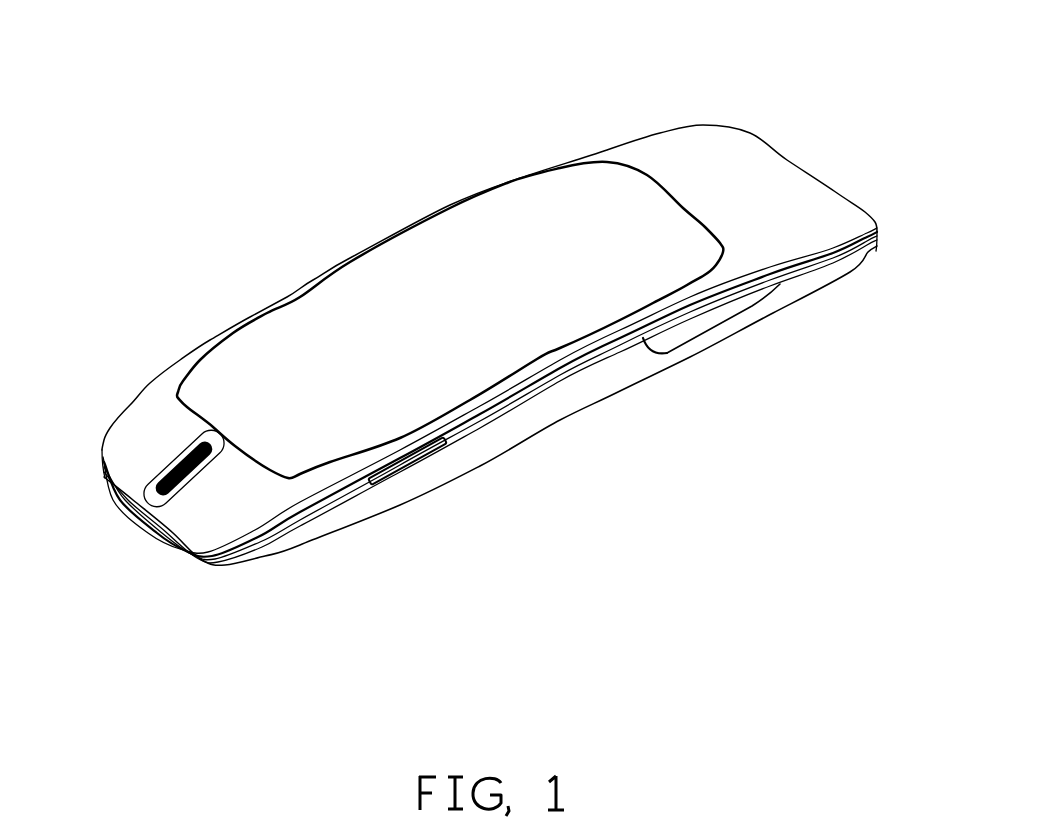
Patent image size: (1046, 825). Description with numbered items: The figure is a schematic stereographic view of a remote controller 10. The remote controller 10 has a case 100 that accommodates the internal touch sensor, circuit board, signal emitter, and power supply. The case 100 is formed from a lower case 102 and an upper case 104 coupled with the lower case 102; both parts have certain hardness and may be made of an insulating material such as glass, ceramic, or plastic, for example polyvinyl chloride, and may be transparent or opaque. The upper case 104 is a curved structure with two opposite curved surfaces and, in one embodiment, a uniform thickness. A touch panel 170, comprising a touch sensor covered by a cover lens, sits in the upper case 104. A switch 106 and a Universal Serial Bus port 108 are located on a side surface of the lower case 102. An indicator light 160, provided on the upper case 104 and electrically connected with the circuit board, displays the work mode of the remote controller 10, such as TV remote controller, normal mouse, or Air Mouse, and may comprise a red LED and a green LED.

The remote controller 10 is at (441, 69).
The case 100 is at (933, 307).
The lower case 102 is at (800, 290).
The upper case 104 is at (790, 253).
The switch 106 is at (395, 478).
The Universal Serial Bus (USB) port 108 is at (677, 343).
The indicator light 160 is at (173, 452).
The touch panel 170 is at (367, 293).